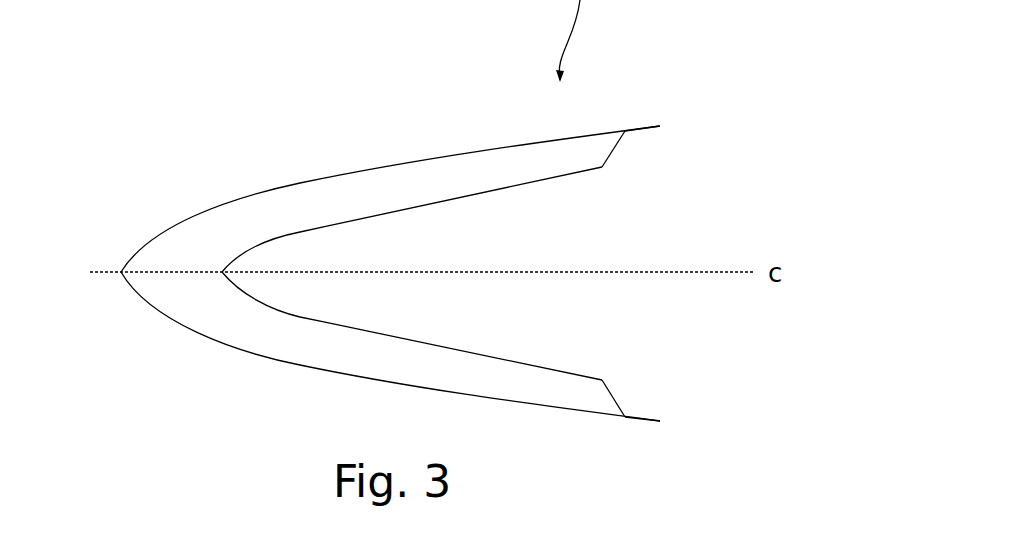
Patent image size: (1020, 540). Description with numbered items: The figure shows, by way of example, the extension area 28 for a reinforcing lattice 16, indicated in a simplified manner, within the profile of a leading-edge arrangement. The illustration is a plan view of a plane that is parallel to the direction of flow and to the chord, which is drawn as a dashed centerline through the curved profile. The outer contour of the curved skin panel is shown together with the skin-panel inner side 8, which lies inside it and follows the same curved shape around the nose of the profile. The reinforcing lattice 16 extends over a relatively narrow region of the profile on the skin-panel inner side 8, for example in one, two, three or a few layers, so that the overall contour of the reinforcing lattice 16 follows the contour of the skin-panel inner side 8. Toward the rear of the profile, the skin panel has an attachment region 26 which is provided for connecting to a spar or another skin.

The skin-panel inner side 8 is at (332, 189).
The reinforcing lattice 16 is at (437, 177).
The attachment region 26 is at (663, 112).
The extension area 28 is at (588, 166).